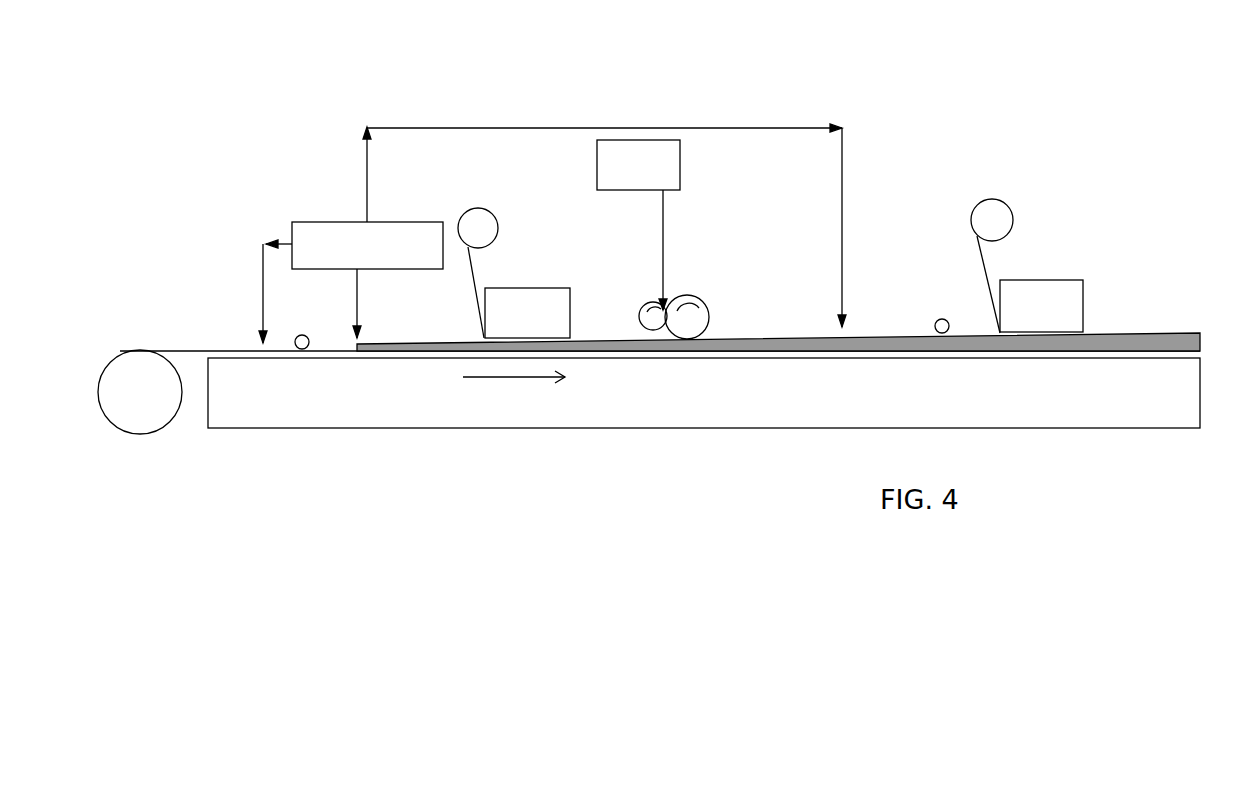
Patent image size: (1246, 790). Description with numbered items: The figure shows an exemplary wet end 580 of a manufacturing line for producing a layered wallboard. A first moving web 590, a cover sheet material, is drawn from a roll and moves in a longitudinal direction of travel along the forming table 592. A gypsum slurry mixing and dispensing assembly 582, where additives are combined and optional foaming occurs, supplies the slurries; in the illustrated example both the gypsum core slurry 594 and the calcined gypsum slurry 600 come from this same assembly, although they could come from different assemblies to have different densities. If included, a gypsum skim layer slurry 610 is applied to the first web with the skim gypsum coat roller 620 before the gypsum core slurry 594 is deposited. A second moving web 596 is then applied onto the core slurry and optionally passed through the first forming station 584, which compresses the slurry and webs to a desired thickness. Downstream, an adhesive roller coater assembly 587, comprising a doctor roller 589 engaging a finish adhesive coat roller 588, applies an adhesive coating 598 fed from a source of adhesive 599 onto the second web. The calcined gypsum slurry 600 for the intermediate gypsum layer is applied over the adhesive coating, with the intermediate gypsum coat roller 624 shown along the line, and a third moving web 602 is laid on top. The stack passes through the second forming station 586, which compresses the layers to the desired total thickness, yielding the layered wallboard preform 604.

The wet end 580 is at (281, 56).
The gypsum slurry mixing and dispensing assembly 582 is at (344, 258).
The first forming station 584 is at (504, 326).
The second forming station 586 is at (1019, 319).
The adhesive roller coater assembly 587 is at (685, 279).
The adhesive coat roller 588 is at (680, 300).
The doctor roller 589 is at (645, 306).
The first moving web 590 is at (190, 351).
The forming table 592 is at (681, 407).
The gypsum core slurry 594 is at (356, 287).
The second moving web 596 is at (474, 287).
The adhesive coating 598 is at (662, 252).
The source of adhesive 599 is at (615, 180).
The calcined gypsum slurry 600 is at (610, 127).
The third moving web 602 is at (980, 283).
The layered wallboard preform 604 is at (1155, 319).
The gypsum skim layer slurry 610 is at (263, 287).
The skim gypsum coat roller 620 is at (298, 350).
The intermediate gypsum coat roller 624 is at (940, 333).